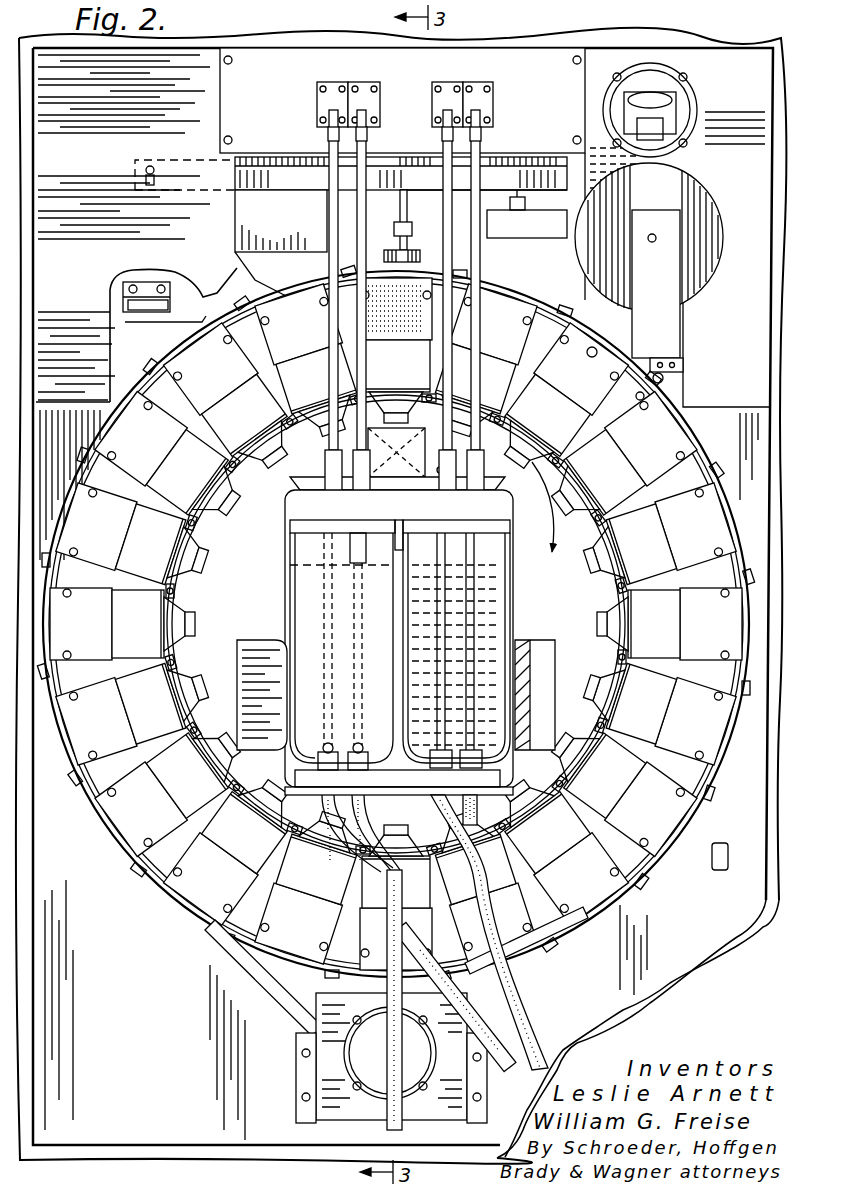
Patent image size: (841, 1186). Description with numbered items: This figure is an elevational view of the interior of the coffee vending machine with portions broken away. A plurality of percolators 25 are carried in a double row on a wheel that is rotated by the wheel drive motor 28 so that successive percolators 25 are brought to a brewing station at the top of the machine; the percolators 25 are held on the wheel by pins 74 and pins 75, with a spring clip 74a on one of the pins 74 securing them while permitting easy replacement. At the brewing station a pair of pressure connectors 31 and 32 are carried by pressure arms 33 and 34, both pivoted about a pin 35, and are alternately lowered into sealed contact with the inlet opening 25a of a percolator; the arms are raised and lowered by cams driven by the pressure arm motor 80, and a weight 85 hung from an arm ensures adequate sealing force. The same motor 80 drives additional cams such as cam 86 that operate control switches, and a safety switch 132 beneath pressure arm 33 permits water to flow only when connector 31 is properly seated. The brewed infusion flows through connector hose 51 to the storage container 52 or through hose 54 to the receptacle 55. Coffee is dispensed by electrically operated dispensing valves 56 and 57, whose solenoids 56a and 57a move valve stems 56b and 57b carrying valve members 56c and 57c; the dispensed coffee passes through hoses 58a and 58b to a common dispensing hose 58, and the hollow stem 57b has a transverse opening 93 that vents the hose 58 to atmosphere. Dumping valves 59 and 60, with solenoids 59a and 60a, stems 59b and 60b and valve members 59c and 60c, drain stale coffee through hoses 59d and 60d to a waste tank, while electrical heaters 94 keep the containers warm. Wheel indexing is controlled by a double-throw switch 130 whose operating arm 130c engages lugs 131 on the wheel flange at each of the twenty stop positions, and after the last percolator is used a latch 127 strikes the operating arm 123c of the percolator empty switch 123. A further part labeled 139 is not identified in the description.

The percolator 25 is at (580, 385).
The inlet opening 25a is at (413, 346).
The wheel drive motor 28 is at (365, 1080).
The pressure connector 31 is at (400, 235).
The pressure connector 32 is at (410, 236).
The pressure arm 33 is at (490, 172).
The pressure arm 34 is at (540, 157).
The pin 35 is at (135, 176).
The connector hose 51 is at (332, 500).
The storage container 52 is at (300, 590).
The hose 54 is at (445, 470).
The receptacle 55 is at (510, 602).
The dispensing valve 56 is at (368, 100).
The solenoid 56a is at (372, 110).
The valve stem 56b is at (411, 179).
The valve member 56c is at (362, 745).
The dispensing valve 57 is at (452, 100).
The solenoid 57a is at (440, 130).
The valve stem 57b is at (527, 214).
The valve member 57c is at (437, 748).
The common dispensing hose 58 is at (404, 1106).
The hose 58a is at (372, 812).
The hose 58b is at (378, 828).
The dumping valve 59 is at (328, 105).
The solenoid 59a is at (318, 120).
The valve stem 59b is at (401, 173).
The valve member 59c is at (324, 745).
The hose 59d is at (418, 955).
The dumping valve 60 is at (482, 100).
The solenoid 60a is at (482, 112).
The valve stem 60b is at (478, 255).
The valve member 60c is at (472, 745).
The hose 60d is at (533, 978).
The pin 74 is at (586, 352).
The spring clip 74a is at (637, 399).
The pin 75 is at (547, 475).
The pressure arm motor 80 is at (698, 110).
The weight 85 is at (720, 872).
The cam 86 is at (740, 188).
The transverse opening 93 is at (397, 461).
The electrical heater 94 is at (262, 648).
The percolator empty switch 123 is at (281, 221).
The operating arm 123c is at (345, 253).
The latch 127 is at (562, 300).
The double-throw switch 130 is at (175, 296).
The operating arm 130c is at (168, 322).
The lug 131 is at (175, 302).
The safety switch 132 is at (540, 238).
The bracket 139 is at (386, 519).